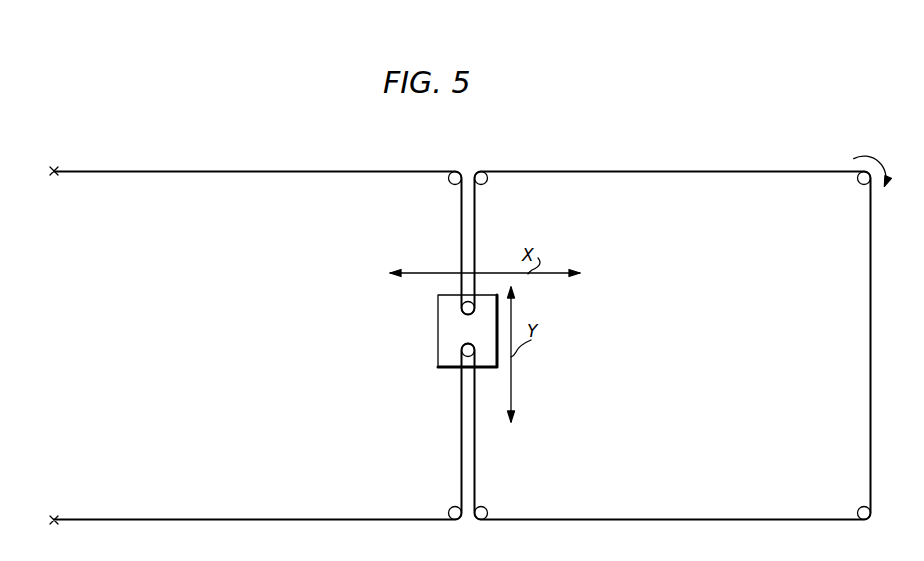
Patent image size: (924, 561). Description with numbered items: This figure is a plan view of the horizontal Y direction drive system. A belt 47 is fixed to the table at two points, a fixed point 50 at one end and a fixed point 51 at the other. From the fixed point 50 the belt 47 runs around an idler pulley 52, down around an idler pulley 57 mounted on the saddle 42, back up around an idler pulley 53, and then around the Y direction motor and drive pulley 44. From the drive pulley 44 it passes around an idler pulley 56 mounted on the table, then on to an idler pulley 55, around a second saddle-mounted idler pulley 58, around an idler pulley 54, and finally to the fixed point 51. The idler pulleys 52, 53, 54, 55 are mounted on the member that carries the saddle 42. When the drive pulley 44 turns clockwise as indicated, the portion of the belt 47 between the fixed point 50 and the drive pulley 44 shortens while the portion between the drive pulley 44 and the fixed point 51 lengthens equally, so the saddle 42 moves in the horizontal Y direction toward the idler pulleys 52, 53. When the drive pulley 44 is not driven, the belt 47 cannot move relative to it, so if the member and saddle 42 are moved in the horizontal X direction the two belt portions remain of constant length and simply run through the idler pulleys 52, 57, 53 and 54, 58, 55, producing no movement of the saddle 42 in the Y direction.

The saddle 42 is at (452, 340).
The drive pulley 44 is at (859, 185).
The belt 47 is at (340, 170).
The fixed point 50 is at (58, 168).
The fixed point 51 is at (58, 517).
The idler pulley 52 is at (457, 171).
The idler pulley 53 is at (484, 171).
The idler pulley 54 is at (454, 521).
The idler pulley 55 is at (481, 521).
The idler pulley 56 is at (872, 512).
The idler pulley 57 is at (462, 311).
The idler pulley 58 is at (463, 349).